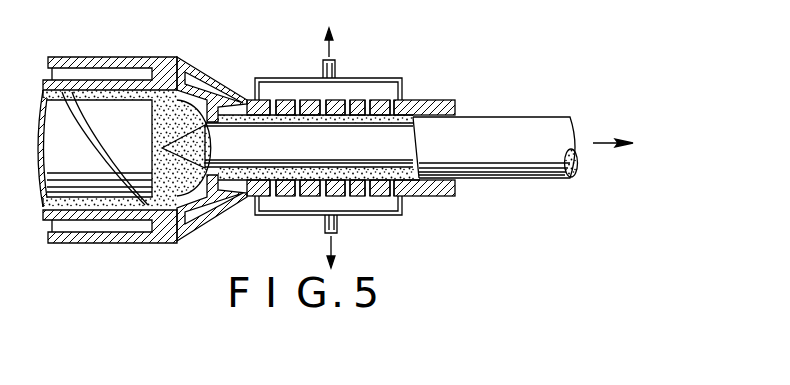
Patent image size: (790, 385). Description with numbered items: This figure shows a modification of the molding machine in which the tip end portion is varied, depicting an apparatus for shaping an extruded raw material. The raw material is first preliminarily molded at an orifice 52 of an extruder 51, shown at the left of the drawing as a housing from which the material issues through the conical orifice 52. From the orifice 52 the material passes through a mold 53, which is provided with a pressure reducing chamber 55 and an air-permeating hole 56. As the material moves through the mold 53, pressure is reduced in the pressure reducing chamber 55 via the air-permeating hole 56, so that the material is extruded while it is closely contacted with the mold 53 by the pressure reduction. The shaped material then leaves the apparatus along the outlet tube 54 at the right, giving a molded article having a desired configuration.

The extruder 51 is at (112, 243).
The orifice 52 is at (205, 222).
The mold 53 is at (285, 116).
The outlet tube 54 is at (500, 176).
The pressure reducing chamber 55 is at (343, 87).
The air-permeating hole 56 is at (367, 101).